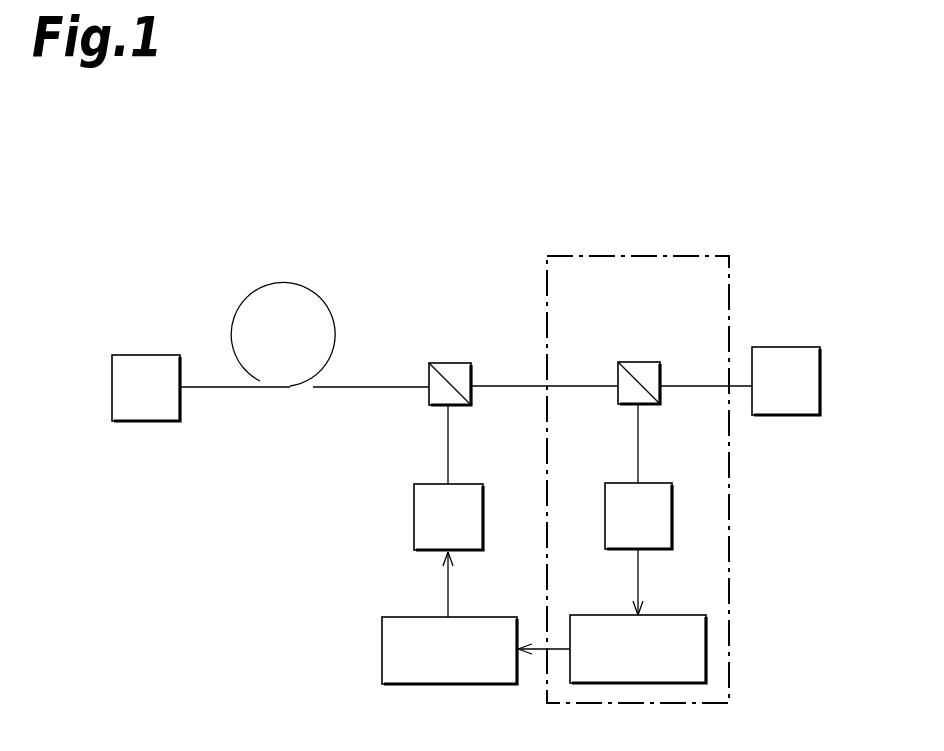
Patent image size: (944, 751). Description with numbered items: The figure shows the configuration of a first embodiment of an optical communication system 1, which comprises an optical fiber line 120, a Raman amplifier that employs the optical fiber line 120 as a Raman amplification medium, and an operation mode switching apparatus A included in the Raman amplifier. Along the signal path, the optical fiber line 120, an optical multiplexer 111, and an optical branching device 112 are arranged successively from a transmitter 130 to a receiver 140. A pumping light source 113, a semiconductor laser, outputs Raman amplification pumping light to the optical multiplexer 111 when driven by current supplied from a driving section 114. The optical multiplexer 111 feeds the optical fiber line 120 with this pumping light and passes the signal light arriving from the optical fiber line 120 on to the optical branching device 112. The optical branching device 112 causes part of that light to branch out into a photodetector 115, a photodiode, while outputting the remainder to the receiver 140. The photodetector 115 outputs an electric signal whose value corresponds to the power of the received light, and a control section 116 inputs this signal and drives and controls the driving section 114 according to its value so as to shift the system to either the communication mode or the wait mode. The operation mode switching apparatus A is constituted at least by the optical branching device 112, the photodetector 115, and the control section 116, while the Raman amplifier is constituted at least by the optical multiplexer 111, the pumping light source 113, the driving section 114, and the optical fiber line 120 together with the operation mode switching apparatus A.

The optical communication system 1 is at (557, 199).
The operation mode switching apparatus A is at (730, 460).
The optical multiplexer 111 is at (447, 362).
The optical branching device 112 is at (636, 361).
The pumping light source 113 is at (413, 517).
The driving section 114 is at (382, 650).
The photodetector 115 is at (672, 513).
The control section 116 is at (707, 648).
The optical fiber line 120 is at (283, 286).
The transmitter 130 is at (147, 353).
The receiver 140 is at (787, 346).